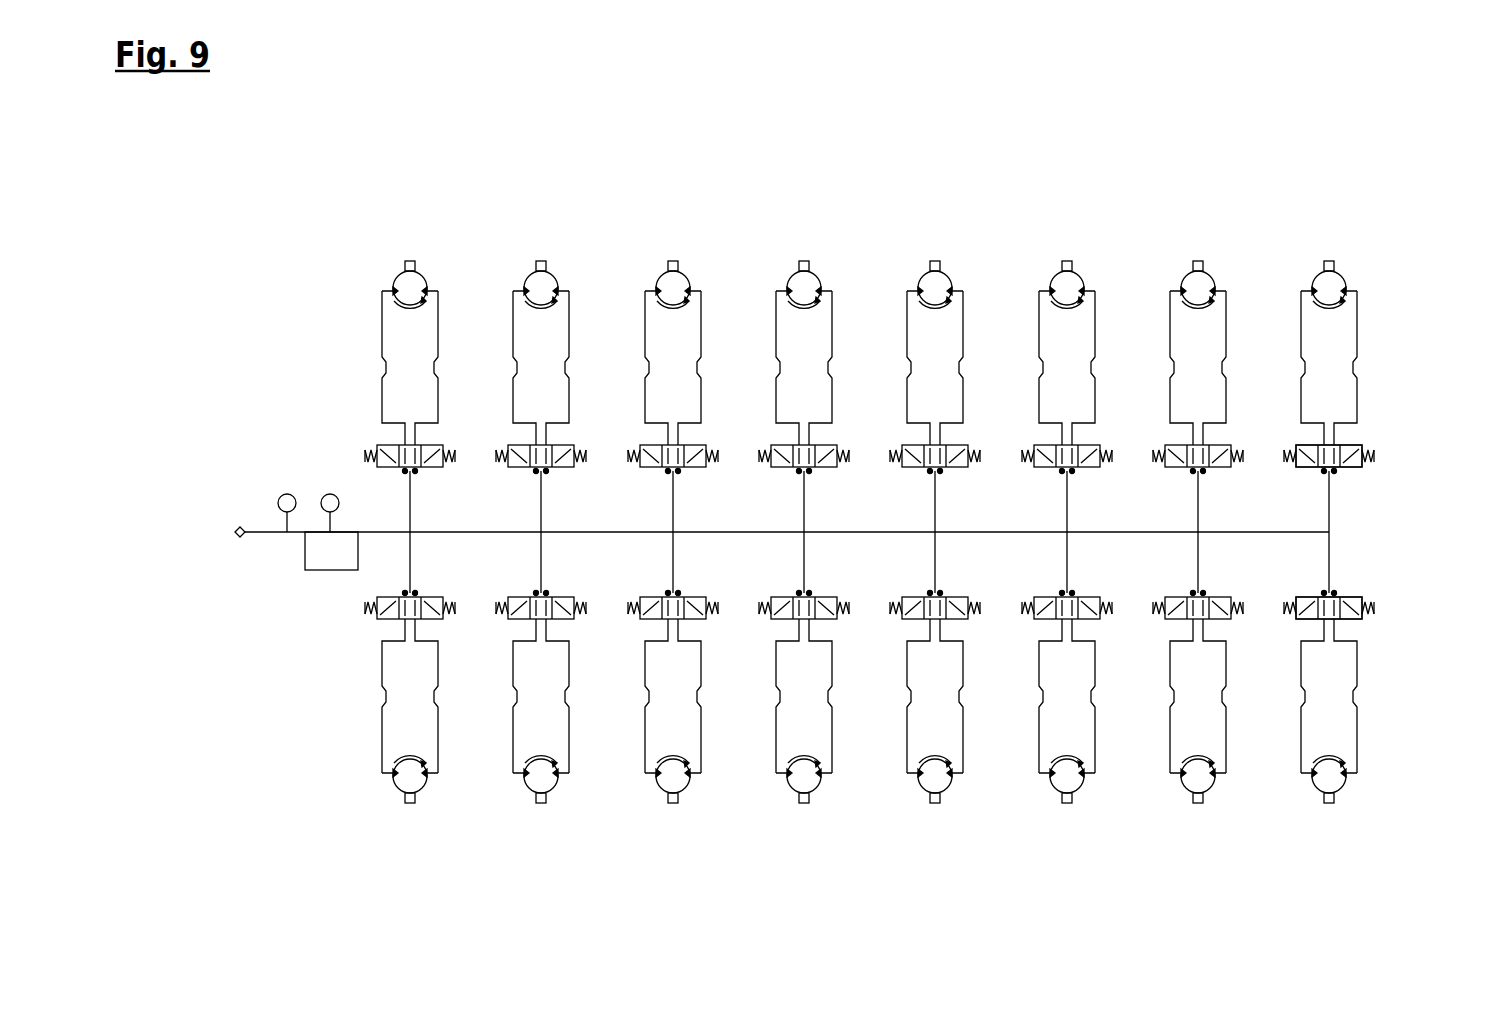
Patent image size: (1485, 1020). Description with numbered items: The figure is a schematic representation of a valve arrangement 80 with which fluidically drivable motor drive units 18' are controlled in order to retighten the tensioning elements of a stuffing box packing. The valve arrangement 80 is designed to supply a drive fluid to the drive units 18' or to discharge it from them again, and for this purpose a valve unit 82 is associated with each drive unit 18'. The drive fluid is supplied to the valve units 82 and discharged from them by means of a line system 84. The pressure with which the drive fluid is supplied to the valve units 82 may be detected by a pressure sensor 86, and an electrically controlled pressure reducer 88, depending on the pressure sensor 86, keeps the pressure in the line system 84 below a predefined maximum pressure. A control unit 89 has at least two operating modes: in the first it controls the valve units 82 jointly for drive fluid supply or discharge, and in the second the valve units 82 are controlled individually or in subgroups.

The valve arrangement 80 is at (295, 315).
The motor drive unit 18' is at (1303, 498).
The valve unit 82 is at (1365, 460).
The line system 84 is at (1166, 535).
The pressure sensor 86 is at (329, 495).
The pressure reducer 88 is at (284, 497).
The control unit 89 is at (323, 558).